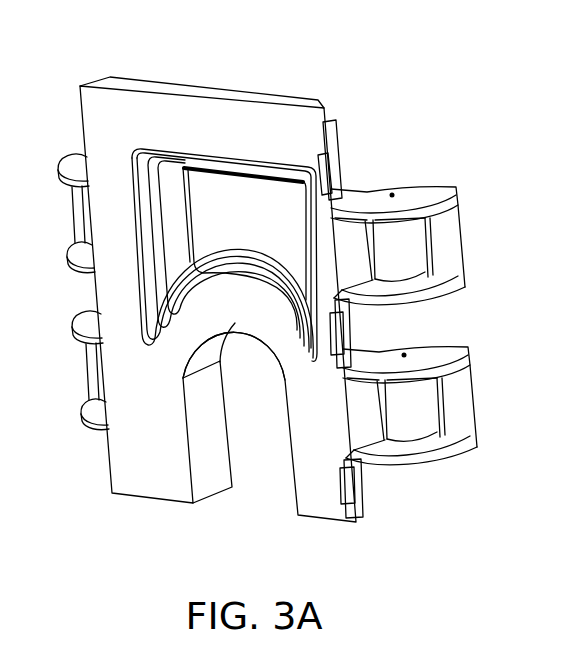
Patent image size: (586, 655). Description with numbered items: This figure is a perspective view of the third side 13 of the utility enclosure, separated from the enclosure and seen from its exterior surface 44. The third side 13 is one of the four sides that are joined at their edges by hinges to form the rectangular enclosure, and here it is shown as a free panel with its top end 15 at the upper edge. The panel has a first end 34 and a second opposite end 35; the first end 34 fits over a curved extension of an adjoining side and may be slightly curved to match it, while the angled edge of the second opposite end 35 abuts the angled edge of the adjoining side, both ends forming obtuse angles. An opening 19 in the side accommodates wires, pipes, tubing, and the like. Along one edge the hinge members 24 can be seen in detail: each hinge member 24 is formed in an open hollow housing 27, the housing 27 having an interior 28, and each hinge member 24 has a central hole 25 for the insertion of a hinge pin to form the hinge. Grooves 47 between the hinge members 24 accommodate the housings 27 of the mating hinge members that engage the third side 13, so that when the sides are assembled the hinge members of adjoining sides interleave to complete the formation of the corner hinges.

The third side 13 is at (307, 92).
The second opposite end 35 is at (68, 113).
The top end 15 is at (181, 94).
The exterior surface 44 is at (151, 470).
The opening 19 is at (264, 464).
The first end 34 is at (343, 137).
The groove 47 is at (343, 332).
The housing 27 is at (434, 221).
The hinge member 24 is at (402, 247).
The central hole 25 is at (393, 192).
The interior 28 is at (450, 414).